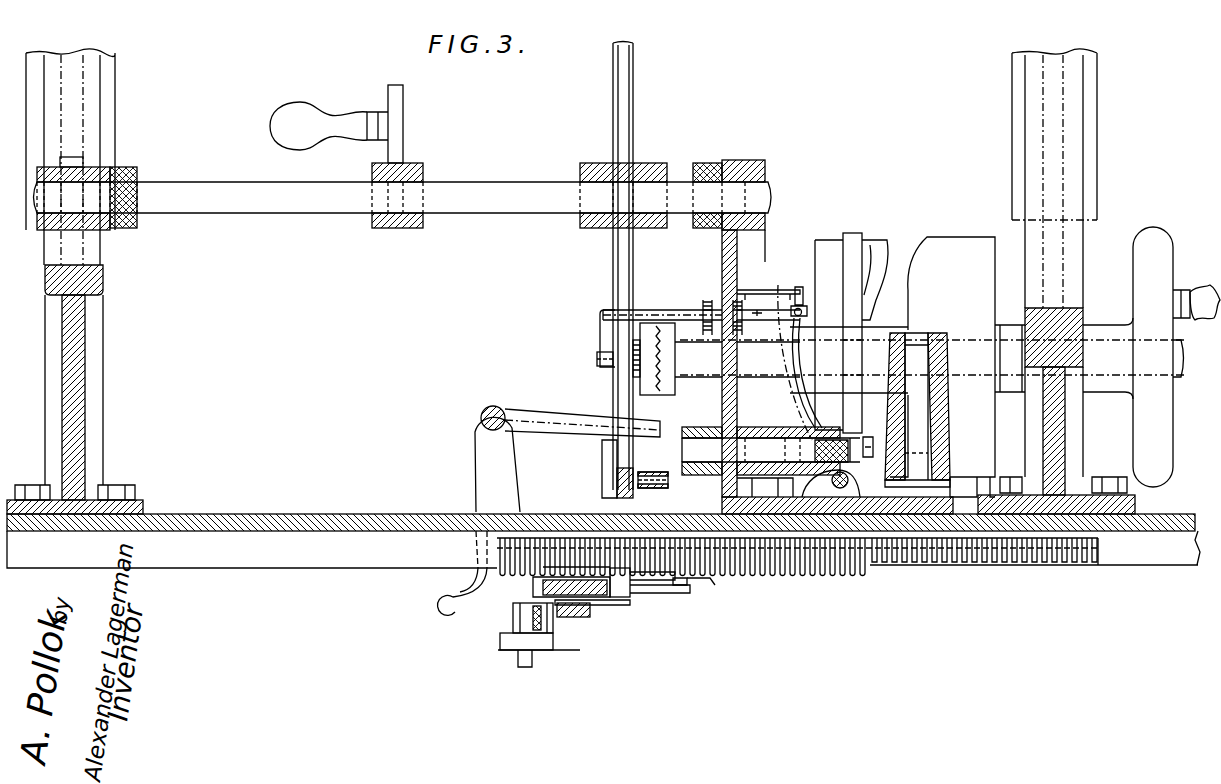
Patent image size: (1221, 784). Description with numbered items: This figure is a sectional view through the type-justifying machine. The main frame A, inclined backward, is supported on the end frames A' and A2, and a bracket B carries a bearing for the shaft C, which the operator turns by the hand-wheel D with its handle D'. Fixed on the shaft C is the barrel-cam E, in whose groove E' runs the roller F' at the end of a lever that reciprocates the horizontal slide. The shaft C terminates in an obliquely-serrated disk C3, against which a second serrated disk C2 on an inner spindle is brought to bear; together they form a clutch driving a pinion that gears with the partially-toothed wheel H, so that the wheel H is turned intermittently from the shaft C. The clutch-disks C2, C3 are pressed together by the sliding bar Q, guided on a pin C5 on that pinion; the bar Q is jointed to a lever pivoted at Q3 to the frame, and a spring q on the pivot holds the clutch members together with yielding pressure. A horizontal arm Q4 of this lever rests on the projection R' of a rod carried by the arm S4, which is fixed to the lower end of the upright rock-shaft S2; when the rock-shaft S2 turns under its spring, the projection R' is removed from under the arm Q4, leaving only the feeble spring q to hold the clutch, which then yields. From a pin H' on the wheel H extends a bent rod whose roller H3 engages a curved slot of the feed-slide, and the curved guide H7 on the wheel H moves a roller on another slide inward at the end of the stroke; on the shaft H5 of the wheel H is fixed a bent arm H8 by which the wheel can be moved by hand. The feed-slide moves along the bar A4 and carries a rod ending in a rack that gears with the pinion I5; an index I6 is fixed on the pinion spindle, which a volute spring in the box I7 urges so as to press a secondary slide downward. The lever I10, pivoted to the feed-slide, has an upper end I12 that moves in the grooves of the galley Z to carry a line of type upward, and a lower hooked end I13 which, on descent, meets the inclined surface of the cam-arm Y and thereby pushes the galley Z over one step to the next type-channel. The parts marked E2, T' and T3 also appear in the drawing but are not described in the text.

The main frame A is at (603, 531).
The end frame A' is at (75, 281).
The end frame A2 is at (1056, 281).
The bar A4 is at (570, 592).
The bracket B is at (817, 337).
The shaft C is at (938, 358).
The clutch-disk C2 is at (657, 369).
The clutch-disk C3 is at (654, 377).
The pin C5 is at (595, 338).
The hand-wheel D is at (1153, 357).
The handle D' is at (1196, 302).
The barrel-cam E is at (908, 367).
The groove E' is at (855, 335).
The cylinder plate E2 is at (853, 323).
The roller F' is at (906, 410).
The partially-toothed wheel H is at (630, 266).
The pin H' is at (662, 481).
The roller H3 is at (329, 126).
The shaft H5 is at (403, 196).
The curved guide H7 is at (604, 469).
The bent arm H8 is at (405, 124).
The pinion I5 is at (524, 618).
The index I6 is at (536, 661).
The spring box I7 is at (539, 639).
The lever I10 is at (682, 596).
The upper end of lever I12 is at (655, 594).
The lower hooked end of lever I13 is at (690, 592).
The sliding bar Q is at (701, 306).
The pivot Q3 is at (716, 313).
The horizontal arm Q4 is at (768, 286).
The spring q is at (758, 308).
The projection R' is at (799, 292).
The rock-shaft S2 is at (840, 466).
The arm S4 is at (812, 350).
The lever pin T' is at (567, 449).
The hook T3 is at (449, 573).
The cam-arm Y is at (710, 593).
The galley Z is at (950, 566).